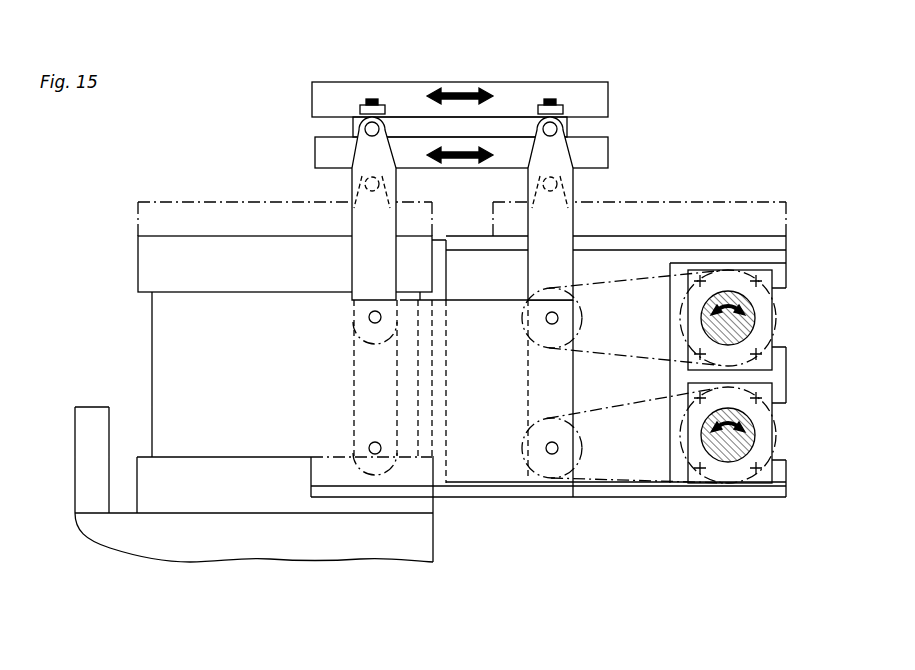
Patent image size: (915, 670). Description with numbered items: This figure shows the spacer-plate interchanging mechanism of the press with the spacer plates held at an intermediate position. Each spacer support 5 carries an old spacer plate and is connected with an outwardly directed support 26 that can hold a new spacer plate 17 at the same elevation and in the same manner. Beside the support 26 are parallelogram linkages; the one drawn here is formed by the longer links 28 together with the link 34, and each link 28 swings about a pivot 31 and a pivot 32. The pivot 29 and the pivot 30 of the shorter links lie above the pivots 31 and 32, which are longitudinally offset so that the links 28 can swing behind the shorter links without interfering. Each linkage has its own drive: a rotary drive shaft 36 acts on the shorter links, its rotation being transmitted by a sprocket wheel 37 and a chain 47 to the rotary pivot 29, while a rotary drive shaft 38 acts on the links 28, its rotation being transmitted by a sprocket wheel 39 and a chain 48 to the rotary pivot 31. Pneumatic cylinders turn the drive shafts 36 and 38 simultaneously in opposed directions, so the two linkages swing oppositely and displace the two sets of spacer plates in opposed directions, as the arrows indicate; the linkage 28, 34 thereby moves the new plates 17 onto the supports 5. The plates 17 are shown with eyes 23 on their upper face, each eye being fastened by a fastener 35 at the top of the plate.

The spacer support 5 is at (150, 253).
The spacer plate 17 is at (527, 90).
The eye 23 is at (360, 110).
The outwardly directed support 26 is at (633, 463).
The longer link 28 is at (360, 177).
The pivot 29 is at (546, 319).
The pivot 30 is at (368, 316).
The pivot 31 is at (555, 453).
The pivot 32 is at (372, 455).
The link 34 is at (353, 124).
The screw 35 is at (365, 103).
The rotary drive shaft 36 is at (752, 327).
The sprocket wheel 37 is at (776, 301).
The rotary drive shaft 38 is at (752, 434).
The sprocket wheel 39 is at (783, 447).
The chain 47 is at (633, 280).
The chain 48 is at (633, 403).